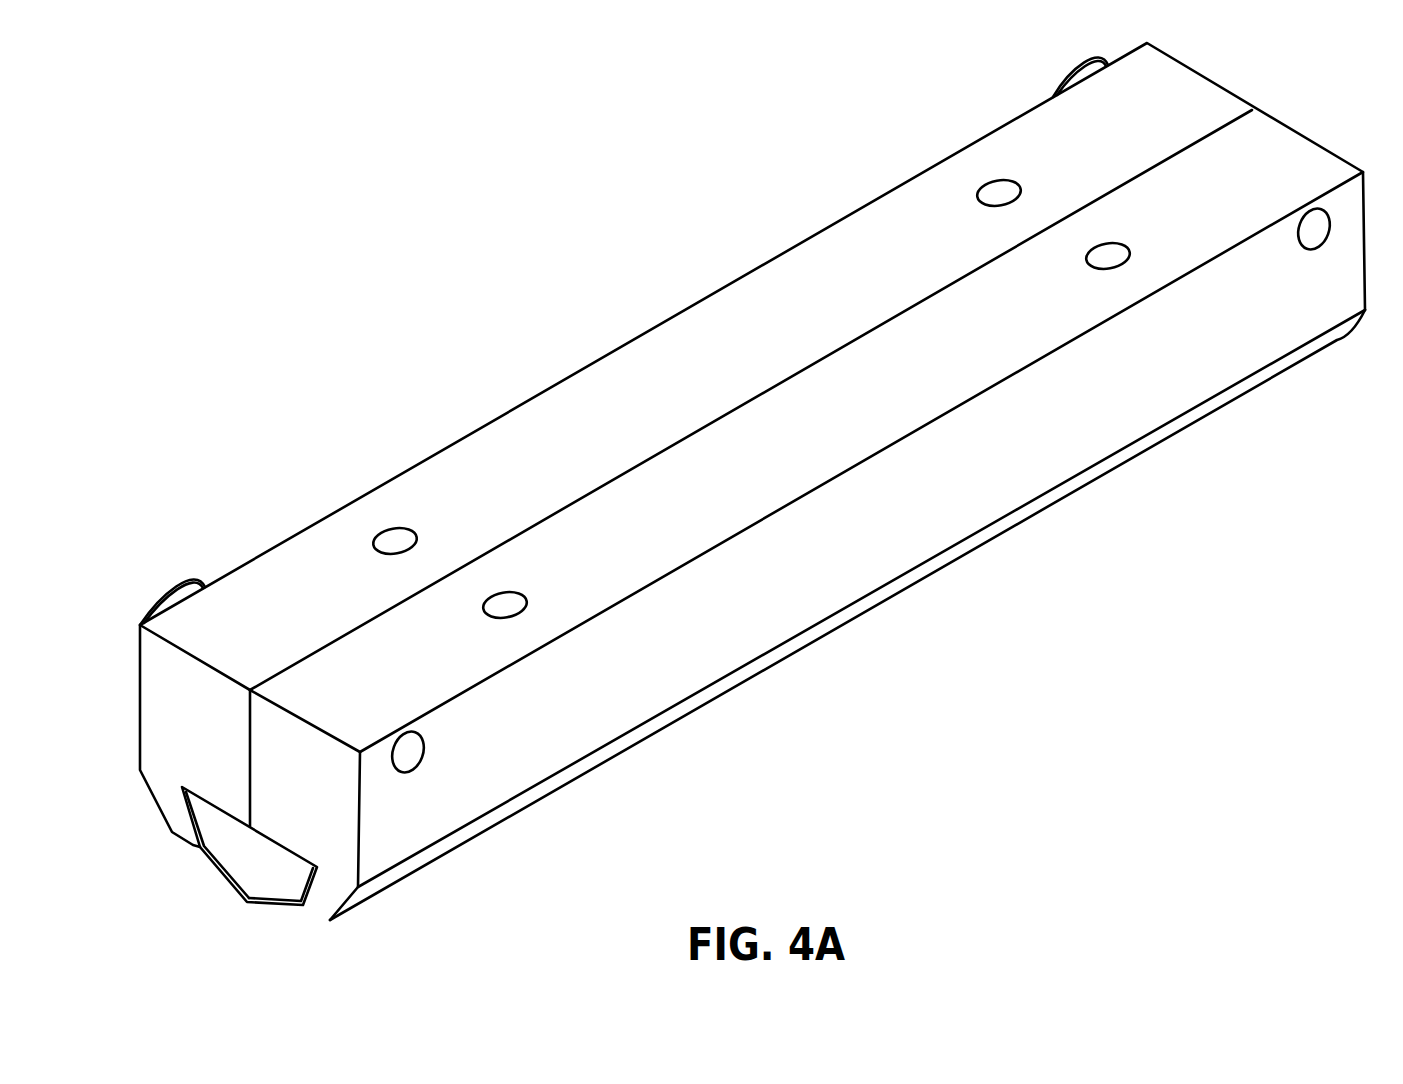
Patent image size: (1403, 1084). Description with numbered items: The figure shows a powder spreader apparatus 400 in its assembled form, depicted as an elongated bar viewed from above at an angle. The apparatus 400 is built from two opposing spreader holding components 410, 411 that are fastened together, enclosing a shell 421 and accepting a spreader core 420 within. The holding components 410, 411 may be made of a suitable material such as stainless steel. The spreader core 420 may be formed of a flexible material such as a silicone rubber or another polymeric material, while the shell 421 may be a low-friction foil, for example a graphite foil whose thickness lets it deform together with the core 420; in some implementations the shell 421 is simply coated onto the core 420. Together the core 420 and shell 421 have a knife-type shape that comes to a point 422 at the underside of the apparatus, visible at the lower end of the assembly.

The powder spreader apparatus 400 is at (348, 100).
The spreader holding component 410 is at (262, 561).
The spreader holding component 411 is at (580, 772).
The spreader core 420 is at (223, 848).
The shell 421 is at (263, 906).
The point 422 is at (252, 907).